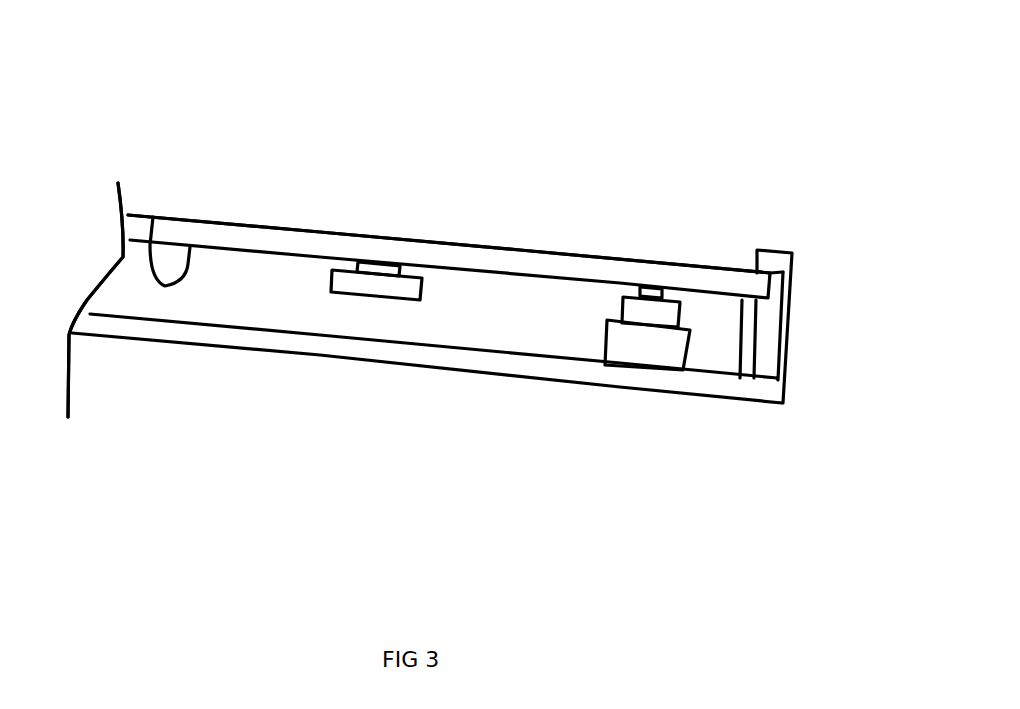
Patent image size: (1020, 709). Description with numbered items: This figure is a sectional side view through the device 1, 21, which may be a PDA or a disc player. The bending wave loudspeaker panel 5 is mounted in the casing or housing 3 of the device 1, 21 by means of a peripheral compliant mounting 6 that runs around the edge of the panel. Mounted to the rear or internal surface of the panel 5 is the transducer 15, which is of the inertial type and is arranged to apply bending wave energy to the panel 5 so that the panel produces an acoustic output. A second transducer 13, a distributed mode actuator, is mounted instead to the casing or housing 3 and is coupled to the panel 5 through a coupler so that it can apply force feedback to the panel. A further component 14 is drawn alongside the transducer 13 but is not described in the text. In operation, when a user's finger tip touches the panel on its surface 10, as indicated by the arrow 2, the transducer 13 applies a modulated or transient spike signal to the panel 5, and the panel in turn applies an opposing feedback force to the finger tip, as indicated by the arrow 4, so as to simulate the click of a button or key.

The device 1 is at (240, 389).
The device 21 is at (236, 402).
The arrow 2 is at (520, 253).
The casing or housing 3 is at (338, 360).
The arrow 4 is at (653, 252).
The bending wave loudspeaker panel 5 is at (153, 217).
The peripheral compliant mounting 6 is at (760, 340).
The surface 10 is at (286, 223).
The transducer 13 is at (603, 344).
The sensor 14 is at (622, 313).
The transducer 15 is at (348, 295).